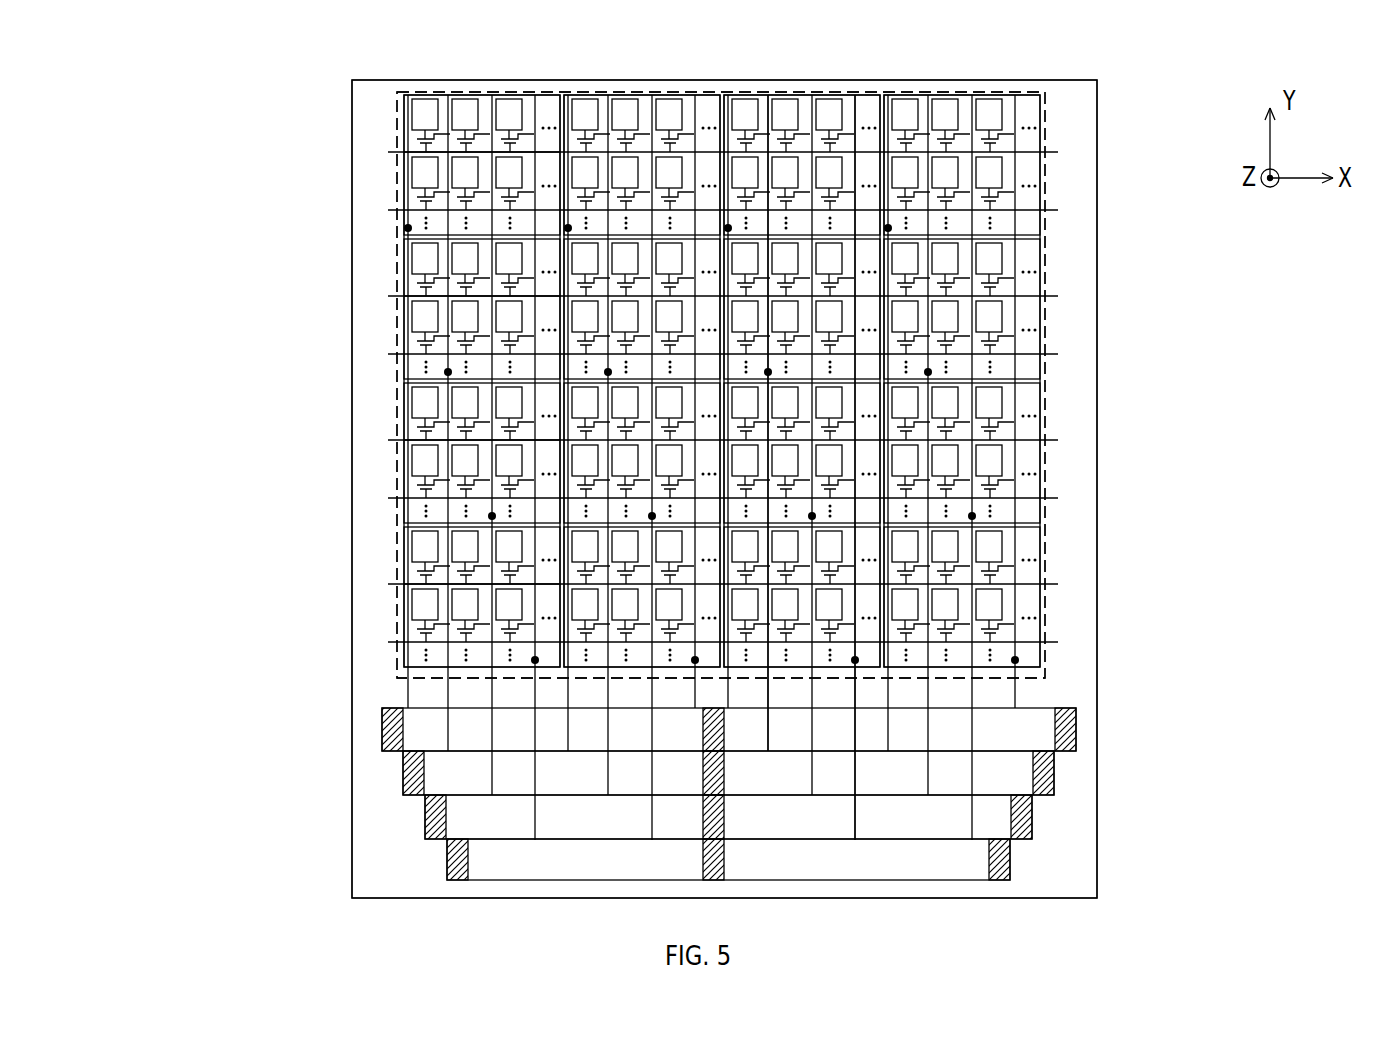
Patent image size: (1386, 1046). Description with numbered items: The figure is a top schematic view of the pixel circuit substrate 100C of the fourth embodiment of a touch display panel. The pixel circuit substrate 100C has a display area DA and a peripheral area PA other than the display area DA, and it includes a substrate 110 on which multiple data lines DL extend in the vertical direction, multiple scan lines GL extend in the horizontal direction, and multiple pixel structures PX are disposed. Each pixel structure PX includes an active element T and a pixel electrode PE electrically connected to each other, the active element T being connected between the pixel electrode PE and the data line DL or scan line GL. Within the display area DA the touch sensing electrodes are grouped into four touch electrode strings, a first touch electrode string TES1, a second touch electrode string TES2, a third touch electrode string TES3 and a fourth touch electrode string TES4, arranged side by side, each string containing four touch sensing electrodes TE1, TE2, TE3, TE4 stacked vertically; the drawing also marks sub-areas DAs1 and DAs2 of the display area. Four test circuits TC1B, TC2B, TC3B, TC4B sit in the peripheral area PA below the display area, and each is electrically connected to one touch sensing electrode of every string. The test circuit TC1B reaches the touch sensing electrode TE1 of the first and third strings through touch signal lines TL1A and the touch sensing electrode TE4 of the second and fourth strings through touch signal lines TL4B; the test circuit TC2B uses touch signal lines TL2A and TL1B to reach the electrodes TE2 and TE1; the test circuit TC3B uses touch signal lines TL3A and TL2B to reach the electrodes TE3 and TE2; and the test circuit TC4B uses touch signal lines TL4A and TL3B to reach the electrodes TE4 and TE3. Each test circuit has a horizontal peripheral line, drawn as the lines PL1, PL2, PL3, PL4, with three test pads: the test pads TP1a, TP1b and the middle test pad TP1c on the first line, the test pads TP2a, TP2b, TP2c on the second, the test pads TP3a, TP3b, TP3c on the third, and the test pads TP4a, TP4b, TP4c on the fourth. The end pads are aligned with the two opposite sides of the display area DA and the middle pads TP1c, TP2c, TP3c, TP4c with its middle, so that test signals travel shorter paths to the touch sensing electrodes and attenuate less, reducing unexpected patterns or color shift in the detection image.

The substrate 110 is at (1098, 328).
The peripheral area PA is at (1084, 114).
The display area DA is at (1048, 92).
The first display sub-area DAs1 is at (372, 131).
The second display sub-area DAs2 is at (1068, 255).
The scan line GL is at (1048, 497).
The data line DL is at (857, 660).
The pixel structure PX is at (1081, 560).
The pixel electrode PE is at (1004, 548).
The active element T is at (1012, 576).
The touch sensing electrode TE1 is at (403, 189).
The touch sensing electrode TE2 is at (403, 322).
The touch sensing electrode TE3 is at (403, 465).
The touch sensing electrode TE4 is at (403, 573).
The first touch electrode string TES1 is at (560, 75).
The second touch electrode string TES2 is at (720, 75).
The third touch electrode string TES3 is at (880, 75).
The fourth touch electrode string TES4 is at (1040, 75).
The touch signal line TL1A is at (406, 703).
The touch signal line TL2A is at (451, 722).
The touch signal line TL3A is at (493, 775).
The touch signal line TL4A is at (538, 820).
The touch signal line TL1B is at (568, 735).
The touch signal line TL2B is at (610, 788).
The touch signal line TL3B is at (652, 828).
The touch signal line TL4B is at (696, 700).
The first pad line PL1 is at (990, 712).
The second pad line PL2 is at (1002, 753).
The third pad line PL3 is at (883, 797).
The fourth pad line PL4 is at (883, 840).
The first test pad a TP1a is at (382, 728).
The first test pad b TP1b is at (1076, 730).
The test pad TP1c is at (724, 715).
The second test pad a TP2a is at (403, 770).
The second test pad b TP2b is at (1054, 773).
The test pad TP2c is at (724, 772).
The third test pad a TP3a is at (425, 812).
The third test pad b TP3b is at (1032, 815).
The test pad TP3c is at (724, 815).
The fourth test pad a TP4a is at (447, 850).
The fourth test pad b TP4b is at (1010, 858).
The test pad TP4c is at (724, 857).
The test circuit TC1B is at (141, 192).
The test circuit TC2B is at (141, 350).
The test circuit TC3B is at (141, 495).
The test circuit TC4B is at (141, 640).
The pixel circuit substrate 100C is at (1385, 907).